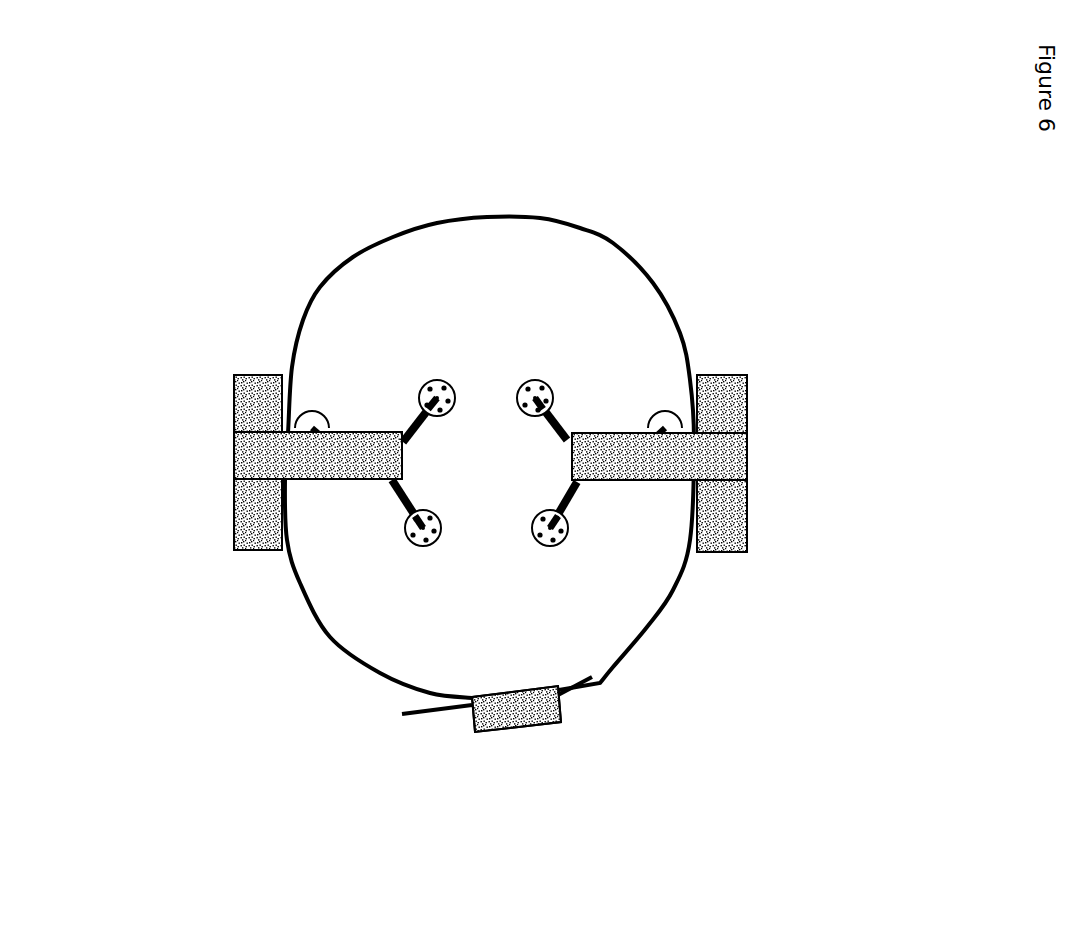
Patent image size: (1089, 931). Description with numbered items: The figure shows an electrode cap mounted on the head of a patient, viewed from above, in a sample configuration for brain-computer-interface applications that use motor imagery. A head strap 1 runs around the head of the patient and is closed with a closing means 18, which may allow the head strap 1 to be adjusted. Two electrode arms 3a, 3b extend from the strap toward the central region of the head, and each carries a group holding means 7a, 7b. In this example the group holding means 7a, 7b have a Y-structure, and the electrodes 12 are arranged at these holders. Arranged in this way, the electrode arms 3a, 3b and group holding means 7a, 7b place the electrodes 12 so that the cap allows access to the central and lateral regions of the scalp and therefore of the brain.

The head strap 1 is at (655, 282).
The electrode arm 3a is at (750, 410).
The electrode arm 3b is at (230, 421).
The group holding means 7a is at (559, 416).
The group holding means 7b is at (395, 494).
The electrodes 12 is at (544, 378).
The closing means 18 is at (535, 729).